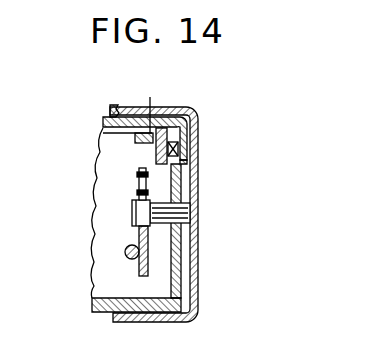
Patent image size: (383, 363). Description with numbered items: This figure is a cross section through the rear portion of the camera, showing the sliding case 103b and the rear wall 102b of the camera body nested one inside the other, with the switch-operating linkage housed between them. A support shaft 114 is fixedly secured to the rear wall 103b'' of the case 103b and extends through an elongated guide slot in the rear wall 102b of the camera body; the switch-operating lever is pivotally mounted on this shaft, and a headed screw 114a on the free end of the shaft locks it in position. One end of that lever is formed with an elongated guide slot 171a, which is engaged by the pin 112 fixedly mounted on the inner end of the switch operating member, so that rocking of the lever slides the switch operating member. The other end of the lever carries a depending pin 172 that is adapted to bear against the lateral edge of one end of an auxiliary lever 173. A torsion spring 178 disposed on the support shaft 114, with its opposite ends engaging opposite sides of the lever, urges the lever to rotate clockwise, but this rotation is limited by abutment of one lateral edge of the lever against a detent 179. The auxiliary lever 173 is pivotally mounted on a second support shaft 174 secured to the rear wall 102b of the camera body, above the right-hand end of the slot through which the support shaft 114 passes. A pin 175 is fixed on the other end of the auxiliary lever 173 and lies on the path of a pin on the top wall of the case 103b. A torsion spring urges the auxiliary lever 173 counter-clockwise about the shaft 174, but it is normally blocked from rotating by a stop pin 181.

The rear wall 102b is at (192, 272).
The case 103b is at (110, 93).
The rear wall of the case 103b'' is at (225, 171).
The pin 112 is at (142, 262).
The support shaft 114 is at (165, 211).
The headed screw 114a is at (134, 221).
The elongated guide slot 171a is at (184, 290).
The depending pin 172 is at (147, 163).
The auxiliary lever 173 is at (197, 121).
The support shaft 174 is at (192, 140).
The pin 175 is at (161, 119).
The torsion spring 178 is at (138, 178).
The detent 179 is at (132, 210).
The stop pin 181 is at (182, 182).